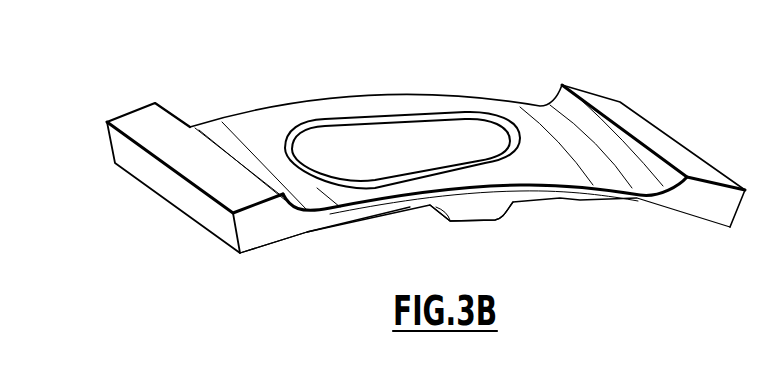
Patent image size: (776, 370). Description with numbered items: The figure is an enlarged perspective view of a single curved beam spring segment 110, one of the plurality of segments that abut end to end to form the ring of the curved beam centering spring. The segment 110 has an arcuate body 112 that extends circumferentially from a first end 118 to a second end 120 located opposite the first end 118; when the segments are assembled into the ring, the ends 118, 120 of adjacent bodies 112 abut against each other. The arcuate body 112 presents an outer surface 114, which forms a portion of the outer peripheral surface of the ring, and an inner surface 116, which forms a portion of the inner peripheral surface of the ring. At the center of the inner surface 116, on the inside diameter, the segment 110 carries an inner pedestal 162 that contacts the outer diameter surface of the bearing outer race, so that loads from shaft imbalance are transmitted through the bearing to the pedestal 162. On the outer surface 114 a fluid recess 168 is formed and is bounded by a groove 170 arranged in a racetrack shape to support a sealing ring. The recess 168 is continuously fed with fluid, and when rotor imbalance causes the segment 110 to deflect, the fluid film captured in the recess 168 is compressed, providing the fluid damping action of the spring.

The curved beam spring segment 110 is at (660, 118).
The arcuate body 112 is at (620, 200).
The outer surface 114 is at (215, 127).
The inner surface 116 is at (305, 233).
The first end 118 is at (146, 165).
The second end 120 is at (697, 168).
The inner pedestal 162 is at (472, 222).
The fluid recess 168 is at (408, 137).
The groove 170 is at (332, 115).